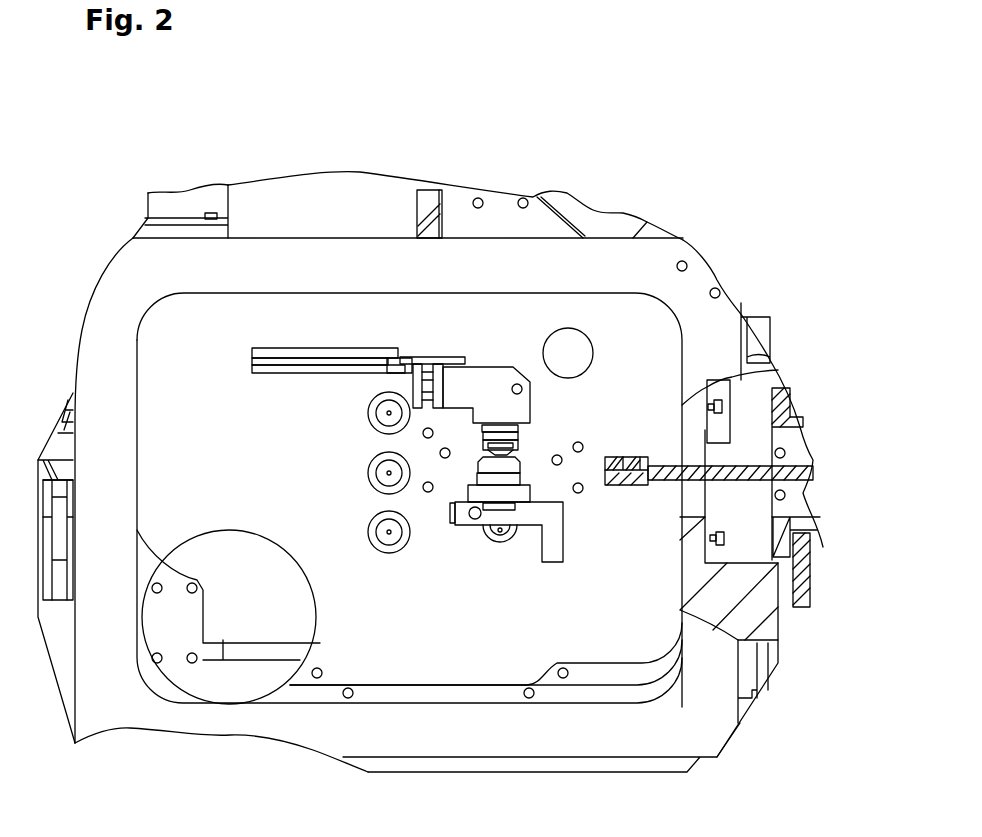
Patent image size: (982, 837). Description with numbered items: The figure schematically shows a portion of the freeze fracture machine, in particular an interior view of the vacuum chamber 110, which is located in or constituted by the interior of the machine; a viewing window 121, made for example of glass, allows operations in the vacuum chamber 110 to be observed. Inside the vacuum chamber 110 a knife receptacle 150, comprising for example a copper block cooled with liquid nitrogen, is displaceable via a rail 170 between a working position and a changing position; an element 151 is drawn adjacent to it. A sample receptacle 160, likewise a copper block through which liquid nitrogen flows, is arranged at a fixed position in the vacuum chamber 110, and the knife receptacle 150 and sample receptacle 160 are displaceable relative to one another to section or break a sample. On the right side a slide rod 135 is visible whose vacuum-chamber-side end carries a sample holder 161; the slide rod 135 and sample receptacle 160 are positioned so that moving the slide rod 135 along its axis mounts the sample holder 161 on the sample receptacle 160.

The vacuum chamber 110 is at (197, 404).
The viewing window 121 is at (457, 307).
The rail 170 is at (335, 353).
The knife receptacle 150 is at (525, 397).
The coupling stack 151 is at (518, 447).
The sample receptacle 160 is at (500, 490).
The sample holder 161 is at (627, 457).
The slide rod 135 is at (747, 473).